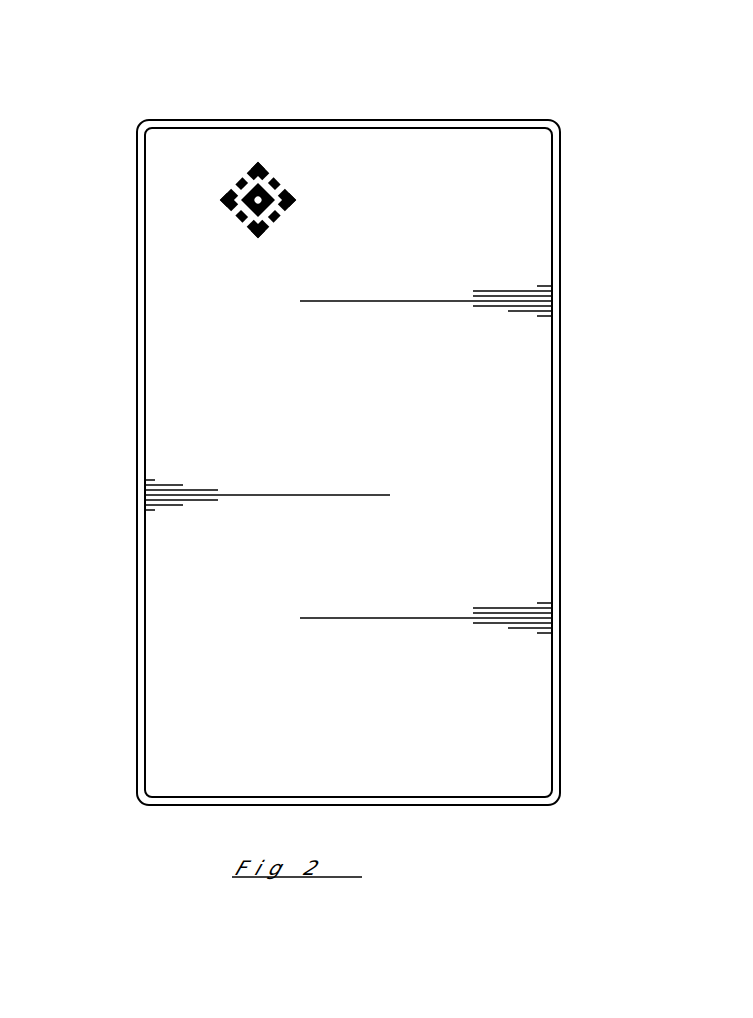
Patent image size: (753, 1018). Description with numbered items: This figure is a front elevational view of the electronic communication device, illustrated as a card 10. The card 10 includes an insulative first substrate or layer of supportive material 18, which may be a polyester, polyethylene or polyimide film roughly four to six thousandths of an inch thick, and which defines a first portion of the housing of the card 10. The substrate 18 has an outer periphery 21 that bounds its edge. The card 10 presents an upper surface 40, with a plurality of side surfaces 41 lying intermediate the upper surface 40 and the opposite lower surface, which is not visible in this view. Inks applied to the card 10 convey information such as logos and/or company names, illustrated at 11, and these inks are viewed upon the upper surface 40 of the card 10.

The card 10 is at (212, 78).
The logos and/or company names 11 is at (333, 198).
The first substrate 18 is at (361, 119).
The outer periphery 21 is at (418, 119).
The upper surface 40 is at (375, 410).
The side surfaces 41 is at (497, 120).